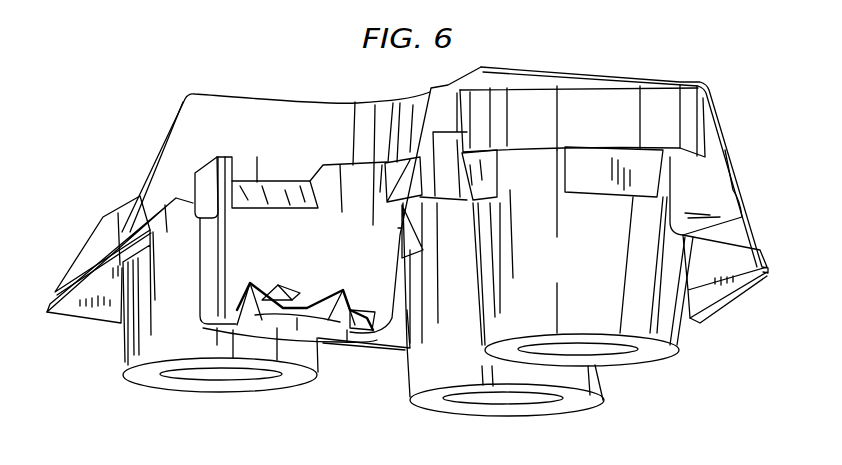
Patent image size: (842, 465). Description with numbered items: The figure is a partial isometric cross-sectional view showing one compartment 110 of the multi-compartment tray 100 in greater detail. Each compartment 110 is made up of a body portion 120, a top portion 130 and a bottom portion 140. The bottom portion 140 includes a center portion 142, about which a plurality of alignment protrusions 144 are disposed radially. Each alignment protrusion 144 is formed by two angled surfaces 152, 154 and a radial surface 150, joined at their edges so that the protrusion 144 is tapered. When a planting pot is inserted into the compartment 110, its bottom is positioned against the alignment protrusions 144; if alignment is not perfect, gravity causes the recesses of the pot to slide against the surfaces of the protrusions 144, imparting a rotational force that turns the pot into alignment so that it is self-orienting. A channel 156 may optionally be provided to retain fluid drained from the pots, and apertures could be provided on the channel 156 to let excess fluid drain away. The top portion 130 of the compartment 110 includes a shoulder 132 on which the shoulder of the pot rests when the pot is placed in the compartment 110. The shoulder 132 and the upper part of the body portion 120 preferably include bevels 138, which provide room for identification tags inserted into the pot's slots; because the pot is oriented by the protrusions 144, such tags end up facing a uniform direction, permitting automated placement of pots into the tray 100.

The multi-compartment tray 100 is at (634, 27).
The compartment 110 is at (178, 191).
The body portion 120 is at (220, 260).
The top portion 130 is at (210, 117).
The shoulder 132 is at (195, 173).
The bevel 138 is at (275, 196).
The bottom portion 140 is at (353, 360).
The center portion 142 is at (297, 320).
The alignment protrusion 144 is at (246, 270).
The radial surface 150 is at (262, 315).
The angled surface 152 is at (262, 292).
The angled surface 154 is at (293, 290).
The channel 156 is at (225, 325).